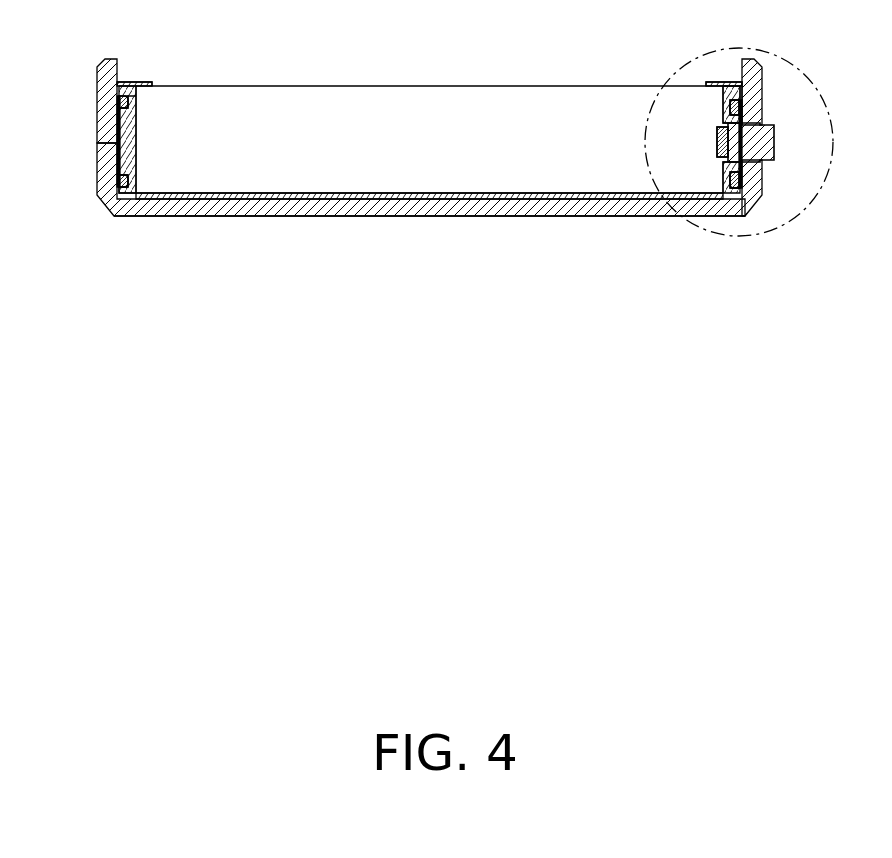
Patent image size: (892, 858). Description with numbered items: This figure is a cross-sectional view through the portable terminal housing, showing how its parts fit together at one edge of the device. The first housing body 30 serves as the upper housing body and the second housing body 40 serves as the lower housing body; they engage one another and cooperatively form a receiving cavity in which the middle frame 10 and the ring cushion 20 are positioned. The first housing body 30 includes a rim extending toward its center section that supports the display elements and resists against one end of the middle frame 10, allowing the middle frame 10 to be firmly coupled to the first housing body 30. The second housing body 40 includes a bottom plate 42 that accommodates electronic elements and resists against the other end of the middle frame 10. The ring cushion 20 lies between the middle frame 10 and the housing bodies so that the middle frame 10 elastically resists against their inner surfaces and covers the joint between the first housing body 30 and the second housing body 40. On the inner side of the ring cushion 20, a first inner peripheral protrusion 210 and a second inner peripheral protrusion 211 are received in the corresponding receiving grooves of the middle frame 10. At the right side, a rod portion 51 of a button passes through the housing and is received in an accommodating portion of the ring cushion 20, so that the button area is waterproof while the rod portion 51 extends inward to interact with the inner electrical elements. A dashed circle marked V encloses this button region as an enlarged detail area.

The middle frame 10 is at (195, 195).
The ring cushion 20 is at (717, 142).
The first inner peripheral protrusion 210 is at (118, 103).
The second inner peripheral protrusion 211 is at (127, 183).
The first housing body 30 is at (100, 93).
The second housing body 40 is at (110, 212).
The bottom plate 42 is at (302, 219).
The rod portion 51 is at (717, 128).
The enlarged detail region V is at (698, 56).